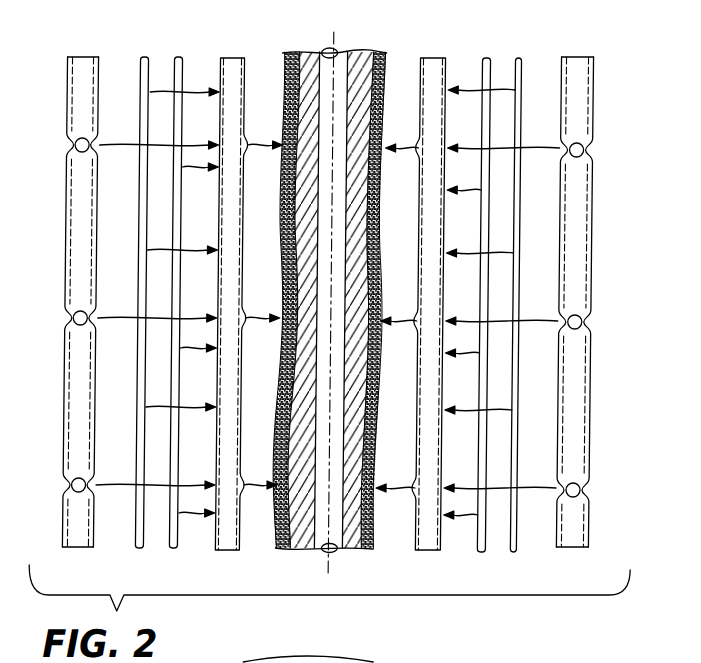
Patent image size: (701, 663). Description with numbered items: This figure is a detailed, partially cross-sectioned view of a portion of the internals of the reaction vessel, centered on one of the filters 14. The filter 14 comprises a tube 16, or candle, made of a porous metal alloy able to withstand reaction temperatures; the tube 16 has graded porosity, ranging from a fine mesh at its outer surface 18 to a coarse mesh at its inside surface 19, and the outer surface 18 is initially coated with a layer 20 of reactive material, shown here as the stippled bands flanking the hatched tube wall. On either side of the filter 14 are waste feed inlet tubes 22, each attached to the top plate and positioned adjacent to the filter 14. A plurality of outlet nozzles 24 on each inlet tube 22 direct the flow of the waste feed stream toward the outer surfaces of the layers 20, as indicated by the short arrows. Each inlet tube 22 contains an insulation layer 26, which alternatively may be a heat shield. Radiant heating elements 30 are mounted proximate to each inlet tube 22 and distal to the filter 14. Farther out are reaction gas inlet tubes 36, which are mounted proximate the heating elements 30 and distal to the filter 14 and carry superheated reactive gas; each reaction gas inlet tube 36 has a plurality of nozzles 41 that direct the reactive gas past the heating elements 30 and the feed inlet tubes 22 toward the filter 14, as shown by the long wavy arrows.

The filter 14 is at (284, 78).
The tube 16 is at (351, 53).
The outer surface 18 is at (361, 549).
The inside surface 19 is at (321, 551).
The layer 20 is at (278, 548).
The inlet tube 22 is at (235, 58).
The outlet nozzle 24 is at (244, 147).
The insulation layer 26 is at (220, 72).
The radiant heating element 30 is at (177, 55).
The reaction gas inlet tube 36 is at (66, 102).
The nozzle 41 is at (97, 313).